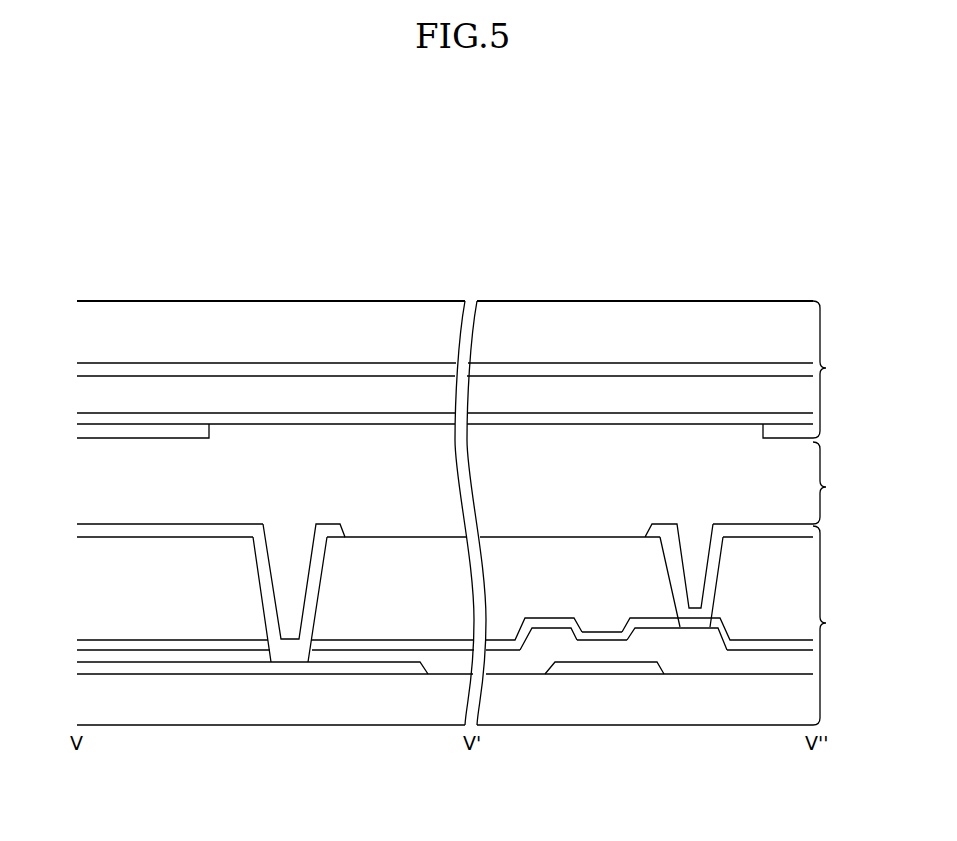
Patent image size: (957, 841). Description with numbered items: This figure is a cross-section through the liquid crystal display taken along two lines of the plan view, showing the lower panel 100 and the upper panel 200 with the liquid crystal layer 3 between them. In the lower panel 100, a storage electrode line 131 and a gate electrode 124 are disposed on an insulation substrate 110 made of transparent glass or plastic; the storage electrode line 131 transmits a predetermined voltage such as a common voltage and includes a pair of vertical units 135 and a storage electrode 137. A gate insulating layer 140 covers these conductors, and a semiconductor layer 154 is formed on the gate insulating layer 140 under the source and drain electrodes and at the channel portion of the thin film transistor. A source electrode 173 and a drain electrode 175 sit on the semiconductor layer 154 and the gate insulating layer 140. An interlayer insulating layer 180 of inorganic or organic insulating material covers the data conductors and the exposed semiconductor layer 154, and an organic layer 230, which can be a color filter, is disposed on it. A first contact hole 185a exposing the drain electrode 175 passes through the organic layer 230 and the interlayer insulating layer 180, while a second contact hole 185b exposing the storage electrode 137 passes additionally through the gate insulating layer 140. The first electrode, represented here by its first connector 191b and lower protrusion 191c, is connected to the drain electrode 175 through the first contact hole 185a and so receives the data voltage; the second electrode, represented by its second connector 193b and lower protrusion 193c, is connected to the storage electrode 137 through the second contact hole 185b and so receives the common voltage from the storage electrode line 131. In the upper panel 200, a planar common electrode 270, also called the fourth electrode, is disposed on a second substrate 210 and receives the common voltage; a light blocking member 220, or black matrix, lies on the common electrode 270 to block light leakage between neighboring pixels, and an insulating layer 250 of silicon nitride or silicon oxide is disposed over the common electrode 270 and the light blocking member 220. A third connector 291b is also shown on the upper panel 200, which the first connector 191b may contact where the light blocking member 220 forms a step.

The second substrate 210 is at (290, 325).
The light blocking member 220 is at (545, 395).
The common electrode 270 is at (637, 370).
The insulating layer 250 is at (723, 420).
The third connector 291b is at (165, 433).
The upper panel 200 is at (840, 369).
The liquid crystal layer 3 is at (828, 483).
The lower panel 100 is at (840, 625).
The organic layer 230 is at (433, 608).
The second connector 193b is at (108, 530).
The lower protrusion 193c is at (233, 530).
The second contact hole 185b is at (313, 570).
The first contact hole 185a is at (690, 560).
The lower protrusion 191c is at (736, 530).
The first connector 191b is at (795, 530).
The interlayer insulating layer 180 is at (122, 642).
The vertical units 135 is at (169, 665).
The storage electrode 137 is at (290, 665).
The storage electrode line 131 is at (392, 668).
The gate insulating layer 140 is at (515, 662).
The insulation substrate 110 is at (231, 708).
The source electrode 173 is at (543, 595).
The drain electrode 175 is at (650, 630).
The semiconductor layer 154 is at (578, 643).
The gate electrode 124 is at (630, 668).